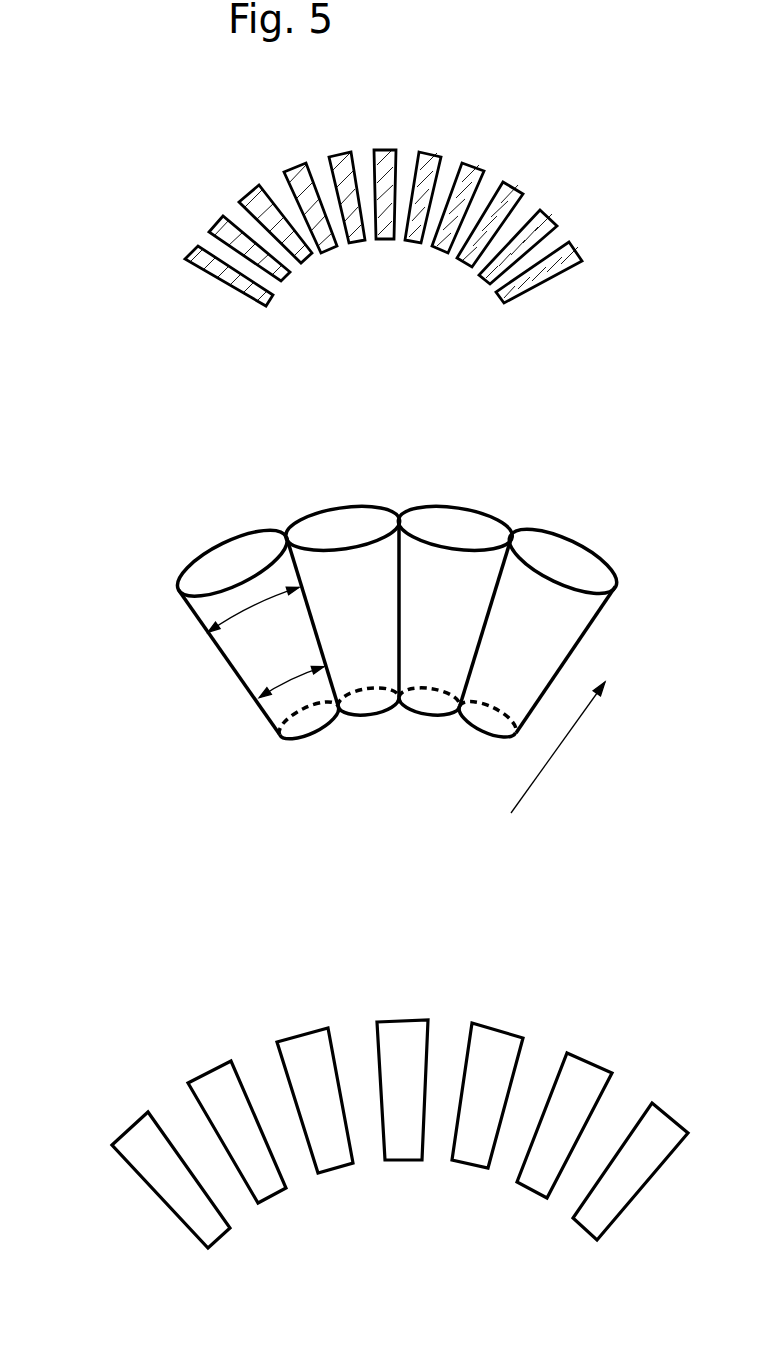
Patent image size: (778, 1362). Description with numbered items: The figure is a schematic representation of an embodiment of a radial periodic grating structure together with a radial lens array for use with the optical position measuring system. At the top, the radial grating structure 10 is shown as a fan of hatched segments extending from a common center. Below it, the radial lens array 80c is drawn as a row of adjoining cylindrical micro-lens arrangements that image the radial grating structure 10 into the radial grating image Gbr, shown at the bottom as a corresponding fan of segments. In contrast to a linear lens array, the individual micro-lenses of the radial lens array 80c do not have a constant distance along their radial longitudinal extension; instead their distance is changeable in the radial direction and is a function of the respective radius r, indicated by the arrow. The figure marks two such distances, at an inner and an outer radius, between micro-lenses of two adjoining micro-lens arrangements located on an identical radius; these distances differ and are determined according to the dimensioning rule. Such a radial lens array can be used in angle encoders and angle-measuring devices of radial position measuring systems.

The radial grating structure 10 is at (550, 275).
The radial lens array 80c is at (498, 588).
The radial grating image Gbr is at (498, 1060).
The radius r is at (558, 747).